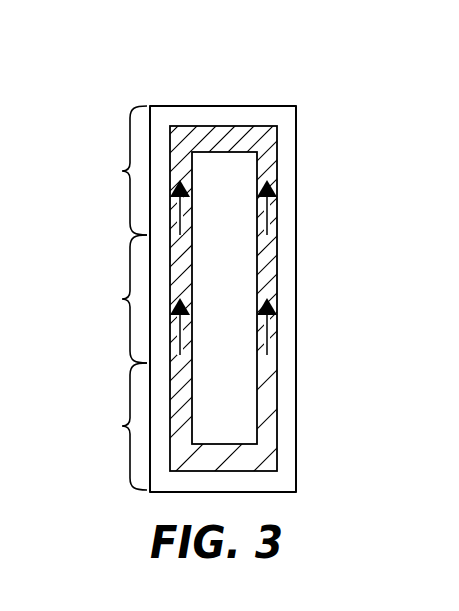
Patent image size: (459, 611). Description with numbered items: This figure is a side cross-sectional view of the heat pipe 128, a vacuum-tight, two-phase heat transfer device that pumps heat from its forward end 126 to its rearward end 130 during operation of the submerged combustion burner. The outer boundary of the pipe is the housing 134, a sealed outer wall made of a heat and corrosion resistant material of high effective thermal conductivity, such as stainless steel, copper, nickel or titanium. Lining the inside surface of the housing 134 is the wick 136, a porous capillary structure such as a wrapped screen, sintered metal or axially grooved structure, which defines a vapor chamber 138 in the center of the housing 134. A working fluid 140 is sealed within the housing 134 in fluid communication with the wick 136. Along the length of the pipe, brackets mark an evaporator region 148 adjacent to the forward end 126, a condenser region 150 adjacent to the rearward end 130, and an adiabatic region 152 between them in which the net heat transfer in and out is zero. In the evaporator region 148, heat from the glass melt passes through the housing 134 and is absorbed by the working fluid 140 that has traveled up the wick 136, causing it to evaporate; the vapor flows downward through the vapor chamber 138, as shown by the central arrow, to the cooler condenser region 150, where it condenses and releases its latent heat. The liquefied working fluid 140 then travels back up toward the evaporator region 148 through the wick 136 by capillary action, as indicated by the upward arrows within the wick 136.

The heat pipe 128 is at (98, 91).
The forward end 126 is at (242, 105).
The housing 134 is at (292, 158).
The rearward end 130 is at (282, 492).
The wick 136 is at (263, 390).
The vapor chamber 138 is at (265, 240).
The working fluid 140 is at (268, 213).
The evaporator region 148 is at (110, 170).
The adiabatic region 152 is at (110, 299).
The condenser region 150 is at (110, 426).